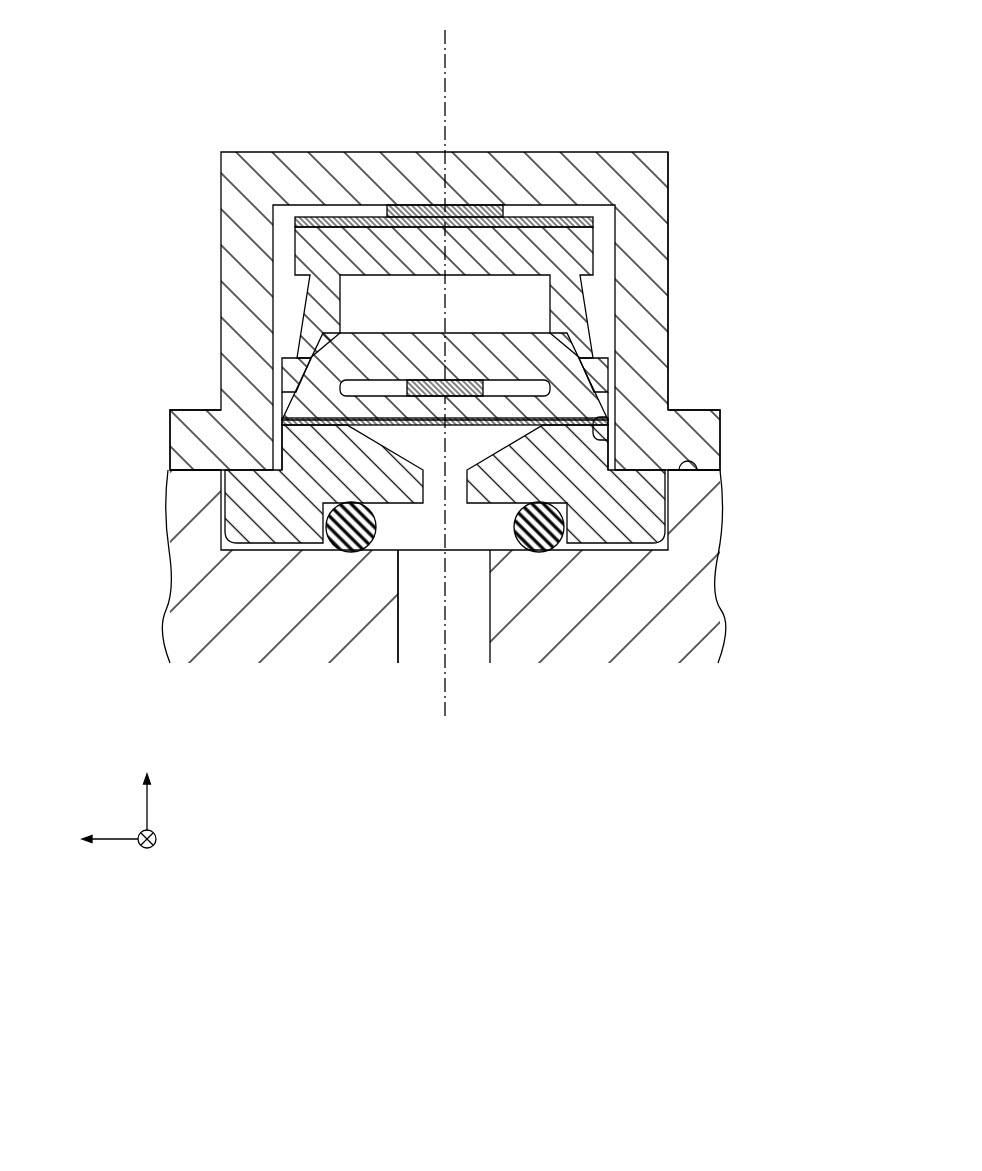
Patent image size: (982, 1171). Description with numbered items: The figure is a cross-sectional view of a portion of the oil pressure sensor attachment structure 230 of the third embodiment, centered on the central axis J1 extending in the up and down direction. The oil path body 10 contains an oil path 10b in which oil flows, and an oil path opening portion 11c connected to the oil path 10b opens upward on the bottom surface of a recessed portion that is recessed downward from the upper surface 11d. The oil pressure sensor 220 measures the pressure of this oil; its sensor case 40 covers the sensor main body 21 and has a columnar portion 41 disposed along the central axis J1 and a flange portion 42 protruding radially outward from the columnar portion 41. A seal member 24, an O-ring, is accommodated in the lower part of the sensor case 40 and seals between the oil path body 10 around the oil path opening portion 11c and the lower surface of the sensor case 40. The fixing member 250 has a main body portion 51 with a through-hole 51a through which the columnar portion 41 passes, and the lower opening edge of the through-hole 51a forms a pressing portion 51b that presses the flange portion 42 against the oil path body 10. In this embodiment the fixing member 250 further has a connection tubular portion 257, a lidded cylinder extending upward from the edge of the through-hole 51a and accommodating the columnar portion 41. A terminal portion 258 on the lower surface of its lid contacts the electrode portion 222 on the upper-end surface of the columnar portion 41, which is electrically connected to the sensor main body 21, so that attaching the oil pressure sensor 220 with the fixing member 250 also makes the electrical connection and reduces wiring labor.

The oil pressure sensor attachment structure 230 is at (210, 88).
The central axis J1 is at (447, 45).
The fixing member 250 is at (615, 150).
The connection tubular portion 257 is at (645, 258).
The oil pressure sensor 220 is at (537, 154).
The electrode portion 222 is at (337, 217).
The terminal portion 258 is at (478, 207).
The sensor case 40 is at (324, 356).
The columnar portion 41 is at (293, 243).
The flange portion 42 is at (260, 485).
The sensor main body 21 is at (480, 363).
The main body portion 51 is at (182, 440).
The through-hole 51a is at (603, 425).
The pressing portion 51b is at (707, 435).
The upper surface 11d is at (705, 465).
The oil path body 10 is at (496, 628).
The oil path opening portion 11c is at (398, 617).
The oil path 10b is at (472, 662).
The seal member 24 is at (543, 555).